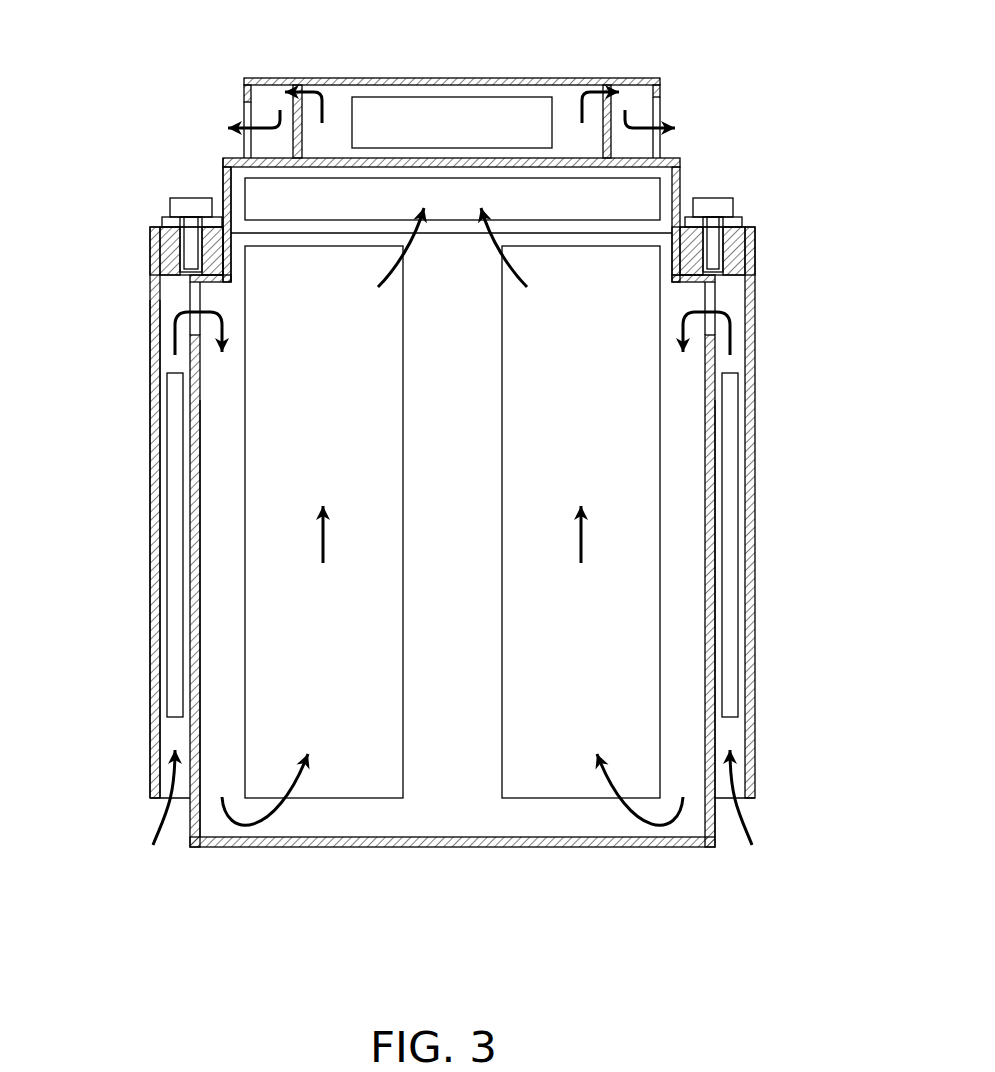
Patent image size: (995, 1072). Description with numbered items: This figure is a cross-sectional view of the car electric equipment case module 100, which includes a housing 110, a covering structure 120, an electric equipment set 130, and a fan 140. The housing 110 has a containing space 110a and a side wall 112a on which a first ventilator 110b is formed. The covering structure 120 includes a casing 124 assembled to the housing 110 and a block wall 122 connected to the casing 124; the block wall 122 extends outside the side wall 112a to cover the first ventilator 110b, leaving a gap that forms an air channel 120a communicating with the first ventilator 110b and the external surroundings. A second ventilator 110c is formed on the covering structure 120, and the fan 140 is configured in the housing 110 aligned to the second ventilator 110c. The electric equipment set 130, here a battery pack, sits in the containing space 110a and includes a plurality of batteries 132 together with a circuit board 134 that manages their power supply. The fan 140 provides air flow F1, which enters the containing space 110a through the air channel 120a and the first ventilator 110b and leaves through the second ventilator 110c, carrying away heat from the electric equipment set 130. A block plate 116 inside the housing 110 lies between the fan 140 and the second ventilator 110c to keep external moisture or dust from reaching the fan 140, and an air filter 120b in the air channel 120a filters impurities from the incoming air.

The car electric equipment case module 100 is at (820, 986).
The housing 110 is at (592, 865).
The containing space 110a is at (200, 640).
The first ventilator 110b is at (190, 306).
The second ventilator 110c is at (662, 117).
The side wall 112a is at (715, 638).
The block plate 116 is at (625, 149).
The covering structure 120 is at (133, 476).
The air channel 120a is at (160, 522).
The air filter 120b is at (175, 418).
The block wall 122 is at (150, 603).
The casing 124 is at (222, 165).
The electric equipment set 130 is at (536, 549).
The batteries 132 is at (355, 783).
The circuit board 134 is at (642, 193).
The fan 140 is at (487, 128).
The air flow F1 is at (668, 143).